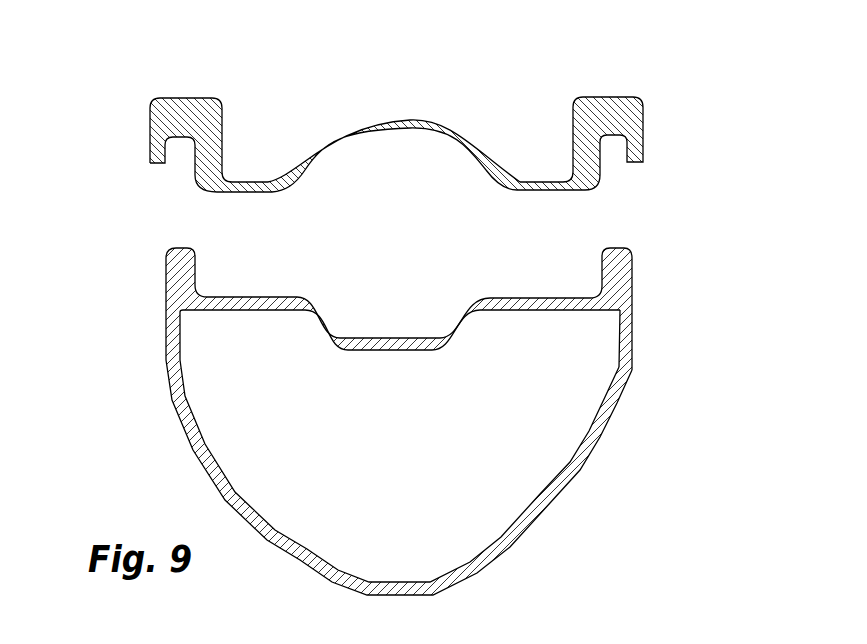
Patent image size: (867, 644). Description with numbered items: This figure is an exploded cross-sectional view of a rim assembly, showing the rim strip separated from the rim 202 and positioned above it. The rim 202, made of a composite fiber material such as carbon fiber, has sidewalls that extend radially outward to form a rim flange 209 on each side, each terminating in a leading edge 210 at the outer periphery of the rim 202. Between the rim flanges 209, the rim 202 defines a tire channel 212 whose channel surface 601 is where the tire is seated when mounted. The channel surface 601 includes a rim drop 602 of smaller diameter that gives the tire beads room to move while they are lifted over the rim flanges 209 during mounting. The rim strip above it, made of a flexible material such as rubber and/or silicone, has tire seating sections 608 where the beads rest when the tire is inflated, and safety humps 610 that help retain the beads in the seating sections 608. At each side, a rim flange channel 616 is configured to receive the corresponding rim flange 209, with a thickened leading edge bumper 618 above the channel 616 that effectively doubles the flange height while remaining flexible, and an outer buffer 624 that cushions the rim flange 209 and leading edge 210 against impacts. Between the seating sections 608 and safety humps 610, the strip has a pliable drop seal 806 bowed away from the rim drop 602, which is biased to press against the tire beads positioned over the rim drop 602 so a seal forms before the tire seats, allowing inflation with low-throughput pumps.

The rim 202 is at (587, 485).
The rim flange 209 is at (193, 272).
The leading edge 210 is at (623, 242).
The tire channel 212 is at (375, 283).
The channel surface 601 is at (538, 298).
The rim drop 602 is at (443, 300).
The tire seating section 608 is at (246, 182).
The safety hump 610 is at (290, 172).
The rim flange channel 616 is at (616, 158).
The leading edge bumper 618 is at (183, 98).
The outer buffer 624 is at (150, 128).
The drop seal 806 is at (416, 120).